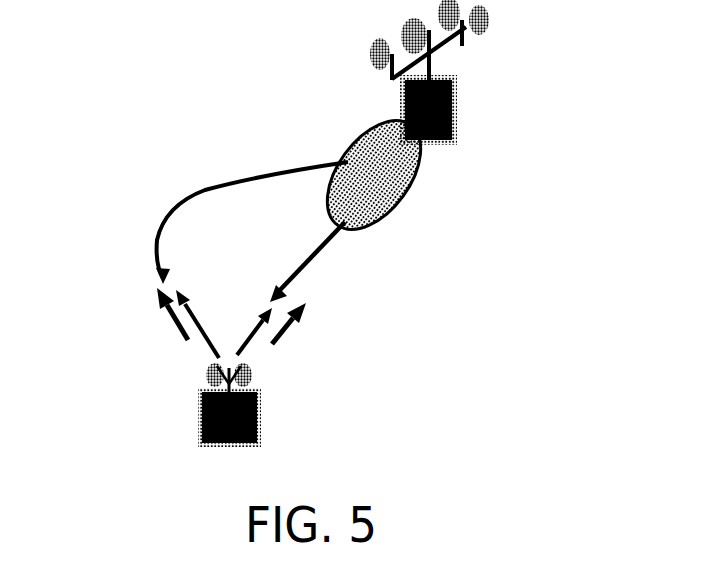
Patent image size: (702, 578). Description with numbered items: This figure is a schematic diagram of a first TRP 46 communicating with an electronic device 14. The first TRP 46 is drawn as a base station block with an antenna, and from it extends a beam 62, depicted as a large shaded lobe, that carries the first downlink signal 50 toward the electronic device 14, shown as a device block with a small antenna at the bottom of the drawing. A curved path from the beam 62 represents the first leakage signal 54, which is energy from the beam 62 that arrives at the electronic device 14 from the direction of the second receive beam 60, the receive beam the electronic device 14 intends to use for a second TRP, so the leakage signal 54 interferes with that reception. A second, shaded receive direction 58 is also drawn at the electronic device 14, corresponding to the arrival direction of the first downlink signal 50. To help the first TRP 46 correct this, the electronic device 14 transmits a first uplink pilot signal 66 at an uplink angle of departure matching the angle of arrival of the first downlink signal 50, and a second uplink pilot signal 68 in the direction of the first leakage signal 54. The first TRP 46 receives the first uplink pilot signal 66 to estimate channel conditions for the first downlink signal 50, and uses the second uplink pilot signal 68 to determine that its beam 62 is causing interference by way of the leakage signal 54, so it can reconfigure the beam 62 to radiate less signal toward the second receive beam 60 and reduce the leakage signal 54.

The electronic device 14 is at (210, 418).
The first TRP 46 is at (410, 97).
The first downlink signal 50 is at (322, 255).
The first leakage signal 54 is at (265, 183).
The second received signal 58 is at (250, 346).
The second receive beam 60 is at (213, 352).
The beam 62 is at (410, 187).
The first uplink pilot signal 66 is at (303, 311).
The second uplink pilot signal 68 is at (162, 318).